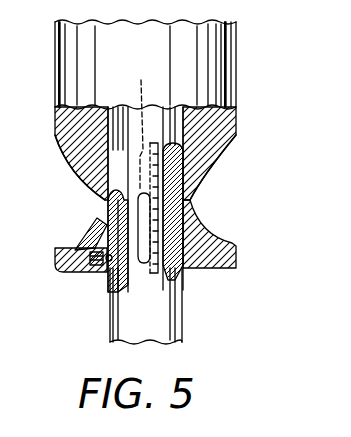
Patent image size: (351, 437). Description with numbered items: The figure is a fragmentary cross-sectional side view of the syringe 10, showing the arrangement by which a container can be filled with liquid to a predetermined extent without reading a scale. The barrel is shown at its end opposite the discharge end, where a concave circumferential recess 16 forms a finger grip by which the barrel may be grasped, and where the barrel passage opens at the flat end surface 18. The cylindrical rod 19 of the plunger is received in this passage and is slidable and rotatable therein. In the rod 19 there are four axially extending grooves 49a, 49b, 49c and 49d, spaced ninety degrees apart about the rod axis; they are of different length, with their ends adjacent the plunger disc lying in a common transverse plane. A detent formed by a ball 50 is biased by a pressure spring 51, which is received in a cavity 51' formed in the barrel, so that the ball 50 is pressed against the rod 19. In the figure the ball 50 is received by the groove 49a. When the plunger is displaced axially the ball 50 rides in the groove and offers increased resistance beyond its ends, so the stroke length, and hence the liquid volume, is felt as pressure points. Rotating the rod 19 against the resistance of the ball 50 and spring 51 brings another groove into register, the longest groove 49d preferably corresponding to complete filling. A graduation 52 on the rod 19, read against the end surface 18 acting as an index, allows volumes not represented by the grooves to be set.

The coupling assembly 10 is at (243, 73).
The circumferential recess 16 is at (222, 143).
The flat end surface 18 is at (203, 272).
The cylindrical rod 19 is at (176, 330).
The axially extending groove 49a is at (102, 220).
The axially extending groove 49b is at (145, 265).
The axially extending groove 49c is at (193, 198).
The axially extending groove 49d is at (133, 124).
The ball 50 is at (100, 268).
The pressure spring 51 is at (66, 244).
The cavity 51' is at (76, 221).
The graduation 52 is at (185, 167).